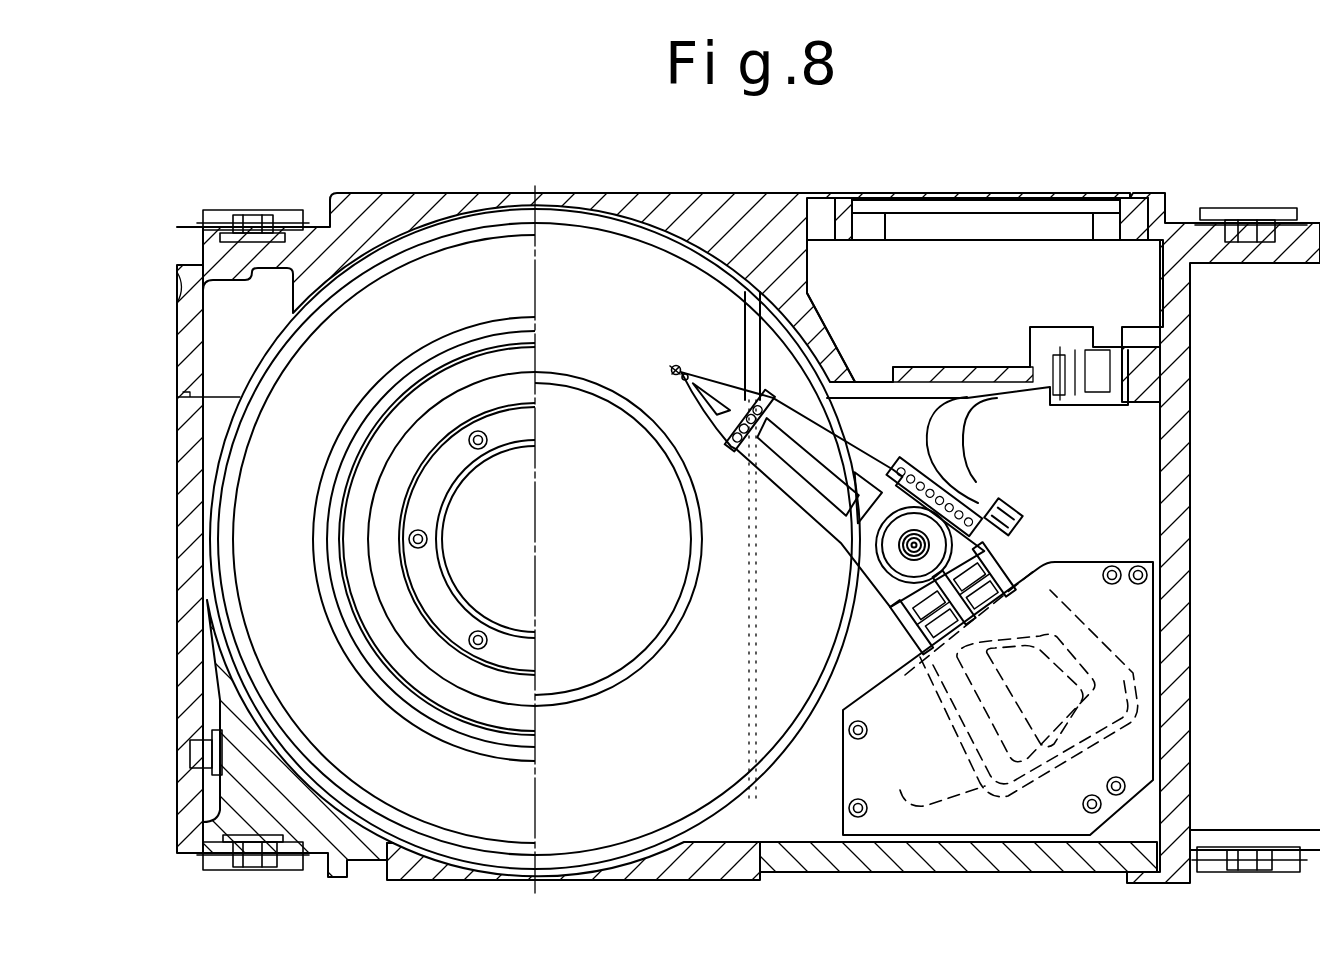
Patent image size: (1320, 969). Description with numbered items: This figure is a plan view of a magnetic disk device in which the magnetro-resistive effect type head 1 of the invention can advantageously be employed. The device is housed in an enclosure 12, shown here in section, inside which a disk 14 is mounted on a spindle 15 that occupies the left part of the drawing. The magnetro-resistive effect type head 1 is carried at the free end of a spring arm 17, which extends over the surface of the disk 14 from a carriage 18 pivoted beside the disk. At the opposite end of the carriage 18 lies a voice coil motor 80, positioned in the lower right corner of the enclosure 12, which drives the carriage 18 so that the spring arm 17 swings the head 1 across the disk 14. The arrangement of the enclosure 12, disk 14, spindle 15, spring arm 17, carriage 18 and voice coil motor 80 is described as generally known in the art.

The magnetro-resistive effect type head 1 is at (681, 368).
The enclosure 12 is at (1083, 187).
The disk 14 is at (387, 780).
The spindle 15 is at (512, 600).
The spring arm 17 is at (740, 410).
The carriage 18 is at (1013, 514).
The voice coil motor 80 is at (1135, 662).